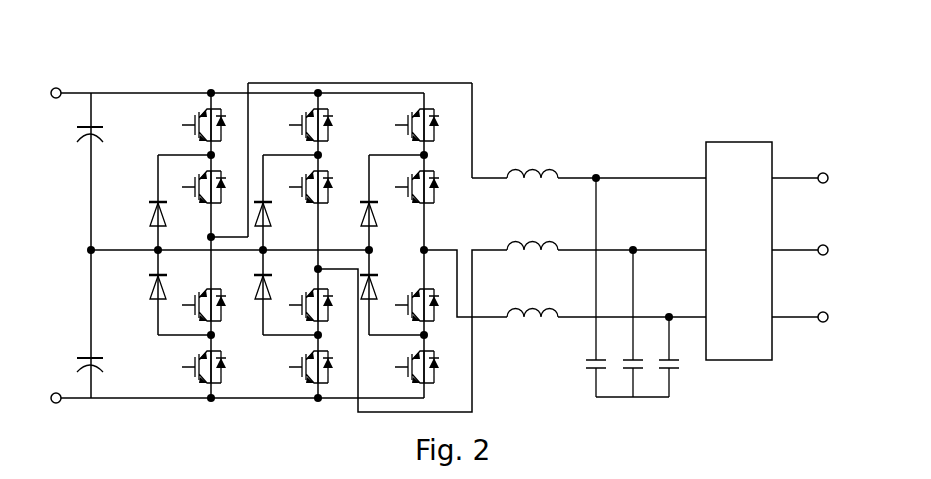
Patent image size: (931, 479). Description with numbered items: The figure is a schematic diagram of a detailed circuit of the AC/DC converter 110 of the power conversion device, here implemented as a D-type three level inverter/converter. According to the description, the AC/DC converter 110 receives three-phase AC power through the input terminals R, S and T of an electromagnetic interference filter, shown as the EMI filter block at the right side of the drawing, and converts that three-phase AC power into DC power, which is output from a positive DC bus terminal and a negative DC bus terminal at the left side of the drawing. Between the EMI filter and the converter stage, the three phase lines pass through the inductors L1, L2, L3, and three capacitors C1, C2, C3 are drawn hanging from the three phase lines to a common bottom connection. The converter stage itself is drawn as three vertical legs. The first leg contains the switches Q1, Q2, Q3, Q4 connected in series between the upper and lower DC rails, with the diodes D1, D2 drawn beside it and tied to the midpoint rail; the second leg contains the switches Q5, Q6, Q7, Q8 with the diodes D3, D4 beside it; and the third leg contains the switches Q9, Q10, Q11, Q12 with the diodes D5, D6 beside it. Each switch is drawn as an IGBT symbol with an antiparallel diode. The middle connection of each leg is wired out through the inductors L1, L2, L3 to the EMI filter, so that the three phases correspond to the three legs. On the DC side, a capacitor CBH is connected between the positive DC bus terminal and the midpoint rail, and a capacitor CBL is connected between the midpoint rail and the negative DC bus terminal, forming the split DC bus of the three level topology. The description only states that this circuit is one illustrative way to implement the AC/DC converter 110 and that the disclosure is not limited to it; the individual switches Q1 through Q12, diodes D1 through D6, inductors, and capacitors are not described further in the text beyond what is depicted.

The AC/DC converter 110 is at (87, 62).
The switch Q1 is at (215, 135).
The switch Q2 is at (215, 197).
The switch Q3 is at (215, 317).
The switch Q4 is at (215, 375).
The switch Q5 is at (322, 135).
The switch Q6 is at (322, 197).
The switch Q7 is at (322, 317).
The switch Q8 is at (322, 375).
The switch Q9 is at (428, 135).
The switch Q10 is at (432, 197).
The switch Q11 is at (432, 317).
The switch Q12 is at (432, 377).
The clamp diode D1 is at (171, 217).
The clamp diode D2 is at (171, 290).
The clamp diode D3 is at (276, 217).
The clamp diode D4 is at (276, 290).
The clamp diode D5 is at (382, 217).
The clamp diode D6 is at (382, 290).
The filter inductor L1 is at (532, 160).
The filter inductor L2 is at (532, 231).
The filter inductor L3 is at (532, 300).
The filter capacitor C1 is at (586, 287).
The filter capacitor C2 is at (623, 323).
The filter capacitor C3 is at (660, 357).
The high-side bus capacitor CBH is at (111, 137).
The low-side bus capacitor CBL is at (110, 369).